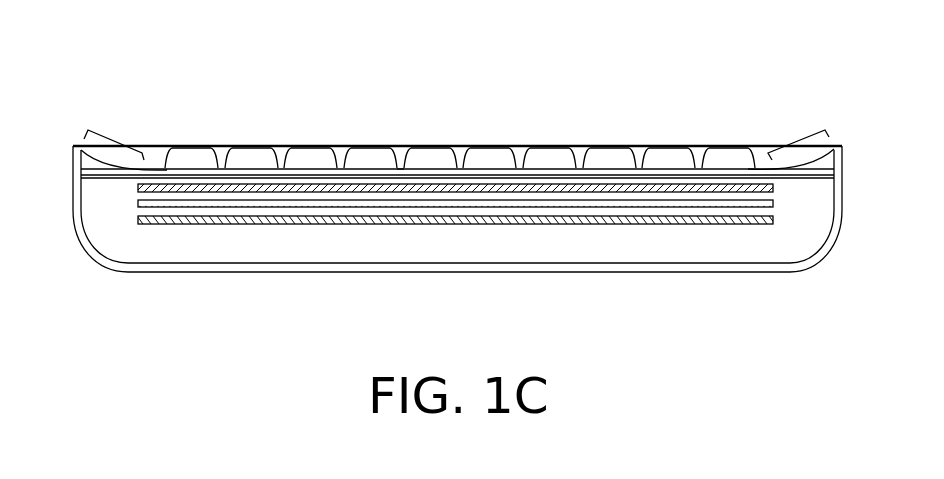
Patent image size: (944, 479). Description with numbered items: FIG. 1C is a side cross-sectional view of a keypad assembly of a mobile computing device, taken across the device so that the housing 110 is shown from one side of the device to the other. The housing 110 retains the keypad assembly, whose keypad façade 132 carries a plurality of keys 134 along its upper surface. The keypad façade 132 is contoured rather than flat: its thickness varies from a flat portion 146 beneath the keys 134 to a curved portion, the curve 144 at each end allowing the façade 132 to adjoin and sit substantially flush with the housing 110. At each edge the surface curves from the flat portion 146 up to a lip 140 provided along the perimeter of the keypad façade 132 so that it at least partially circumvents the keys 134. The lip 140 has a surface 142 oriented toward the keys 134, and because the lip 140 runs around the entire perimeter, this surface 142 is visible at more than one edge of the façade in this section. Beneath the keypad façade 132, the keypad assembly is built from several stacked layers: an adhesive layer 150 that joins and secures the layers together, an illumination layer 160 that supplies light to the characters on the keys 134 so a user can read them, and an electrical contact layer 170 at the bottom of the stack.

The housing 110 is at (708, 277).
The keypad façade 132 is at (545, 184).
The keys 134 is at (308, 151).
The lip 140 is at (111, 127).
The surface 142 is at (803, 153).
The curve 144 is at (825, 171).
The flat portion 146 is at (395, 156).
The adhesive layer 150 is at (166, 190).
The illumination layer 160 is at (164, 209).
The electrical contact layer 170 is at (214, 228).